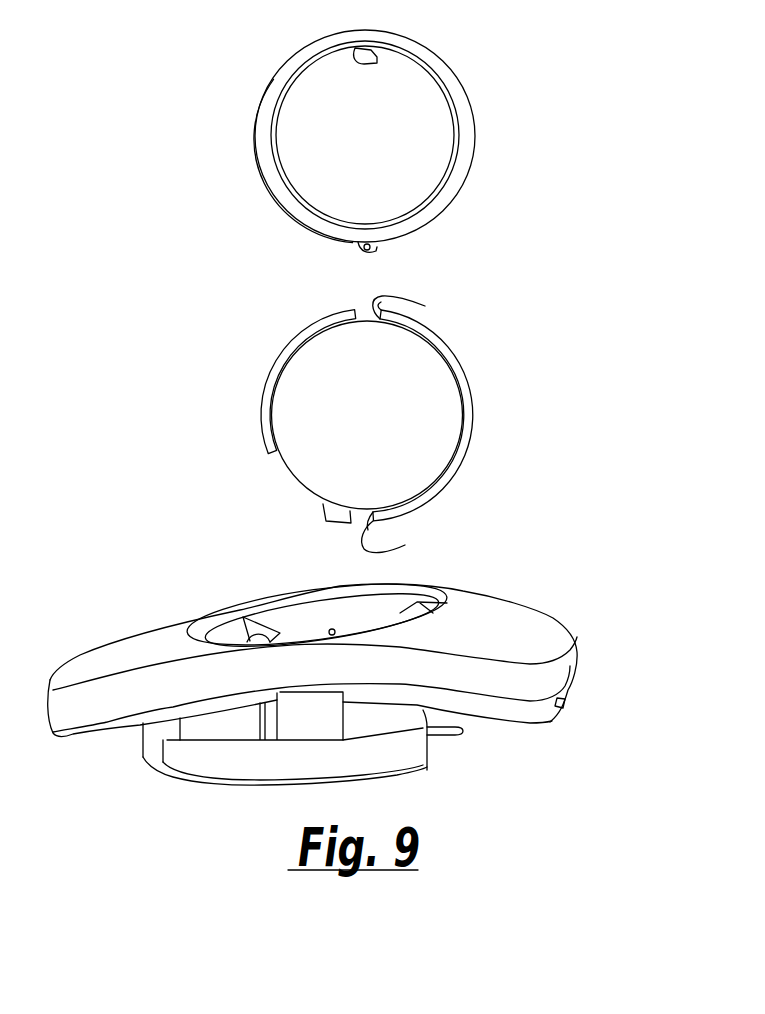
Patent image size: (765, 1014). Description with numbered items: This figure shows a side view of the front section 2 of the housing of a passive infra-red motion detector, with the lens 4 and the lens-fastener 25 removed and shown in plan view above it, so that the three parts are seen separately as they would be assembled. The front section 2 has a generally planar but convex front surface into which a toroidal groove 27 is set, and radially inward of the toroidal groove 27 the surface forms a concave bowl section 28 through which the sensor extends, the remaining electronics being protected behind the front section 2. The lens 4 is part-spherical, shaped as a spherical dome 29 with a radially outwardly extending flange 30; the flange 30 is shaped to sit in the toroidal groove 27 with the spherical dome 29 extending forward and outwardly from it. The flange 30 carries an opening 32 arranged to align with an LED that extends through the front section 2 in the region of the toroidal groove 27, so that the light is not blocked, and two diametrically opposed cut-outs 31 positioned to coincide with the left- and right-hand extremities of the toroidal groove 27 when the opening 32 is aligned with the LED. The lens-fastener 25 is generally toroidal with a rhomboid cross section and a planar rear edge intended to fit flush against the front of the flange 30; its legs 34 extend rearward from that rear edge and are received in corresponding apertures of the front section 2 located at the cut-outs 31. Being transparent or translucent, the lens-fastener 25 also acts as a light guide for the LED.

The front section 2 is at (553, 672).
The lens 4 is at (415, 458).
The lens-fastener 25 is at (467, 155).
The toroidal groove 27 is at (400, 600).
The bowl section 28 is at (443, 604).
The spherical dome 29 is at (403, 403).
The flange 30 is at (453, 366).
The cut-outs 31 is at (425, 306).
The opening 32 is at (280, 457).
The legs 34 is at (377, 57).